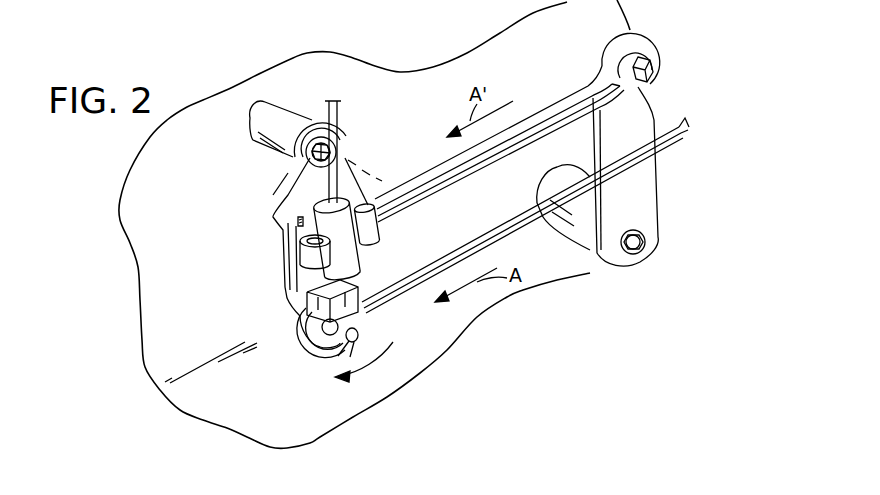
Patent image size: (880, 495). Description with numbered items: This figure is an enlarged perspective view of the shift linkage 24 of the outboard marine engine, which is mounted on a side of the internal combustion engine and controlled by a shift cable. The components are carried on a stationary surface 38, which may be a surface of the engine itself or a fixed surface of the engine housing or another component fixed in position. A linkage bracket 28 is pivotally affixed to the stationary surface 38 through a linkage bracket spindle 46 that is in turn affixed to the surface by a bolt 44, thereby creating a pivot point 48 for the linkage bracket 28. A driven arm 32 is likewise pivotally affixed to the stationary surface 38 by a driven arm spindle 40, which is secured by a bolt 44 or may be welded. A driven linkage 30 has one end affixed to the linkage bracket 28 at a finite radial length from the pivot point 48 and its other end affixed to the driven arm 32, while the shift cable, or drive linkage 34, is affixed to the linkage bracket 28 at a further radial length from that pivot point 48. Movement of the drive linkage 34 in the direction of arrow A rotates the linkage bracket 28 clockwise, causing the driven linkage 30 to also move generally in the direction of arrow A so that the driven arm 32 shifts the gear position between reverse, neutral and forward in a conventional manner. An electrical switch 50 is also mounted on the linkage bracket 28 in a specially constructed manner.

The shift linkage 24 is at (437, 51).
The linkage bracket 28 is at (277, 193).
The driven linkage 30 is at (537, 107).
The driven arm 32 is at (640, 193).
The drive linkage 34 is at (498, 228).
The stationary surface 38 is at (222, 265).
The driven arm spindle 40 is at (580, 223).
The bolt 44 is at (306, 161).
The linkage bracket spindle 46 is at (287, 117).
The pivot point 48 is at (333, 146).
The electrical switch 50 is at (347, 252).